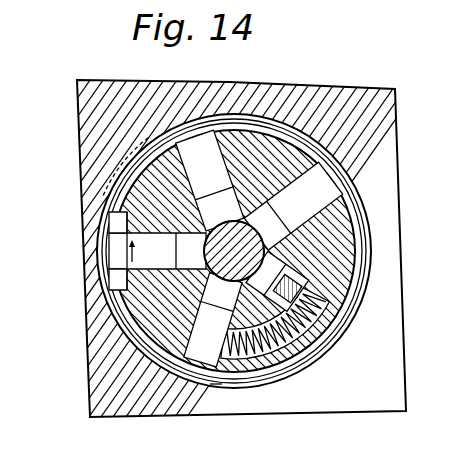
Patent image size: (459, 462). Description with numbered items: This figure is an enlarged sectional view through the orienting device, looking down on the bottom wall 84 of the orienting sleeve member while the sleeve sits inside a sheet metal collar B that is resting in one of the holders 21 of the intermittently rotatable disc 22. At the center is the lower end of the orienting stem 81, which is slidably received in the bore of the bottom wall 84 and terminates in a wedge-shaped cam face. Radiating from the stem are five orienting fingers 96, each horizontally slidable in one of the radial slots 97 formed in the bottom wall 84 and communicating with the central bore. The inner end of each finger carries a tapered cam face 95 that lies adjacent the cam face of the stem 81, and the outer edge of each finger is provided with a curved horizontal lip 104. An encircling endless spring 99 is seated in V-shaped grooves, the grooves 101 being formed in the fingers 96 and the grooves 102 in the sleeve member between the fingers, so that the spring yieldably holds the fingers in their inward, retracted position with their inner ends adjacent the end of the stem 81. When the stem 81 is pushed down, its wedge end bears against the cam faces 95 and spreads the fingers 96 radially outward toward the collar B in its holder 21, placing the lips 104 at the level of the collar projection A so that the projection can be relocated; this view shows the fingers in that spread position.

The holder 21 is at (458, 329).
The disc 22 is at (373, 388).
The orienting stem 81 is at (243, 250).
The bottom wall 84 is at (338, 258).
The cam faces 95 is at (262, 217).
The orienting fingers 96 is at (295, 190).
The radial slots 97 is at (283, 180).
The endless spring 99 is at (257, 356).
The V-shaped groove 101 is at (306, 282).
The V-shaped groove 102 is at (246, 327).
The curved horizontal lip 104 is at (327, 168).
The projection A is at (115, 182).
The sheet metal collar B is at (215, 386).